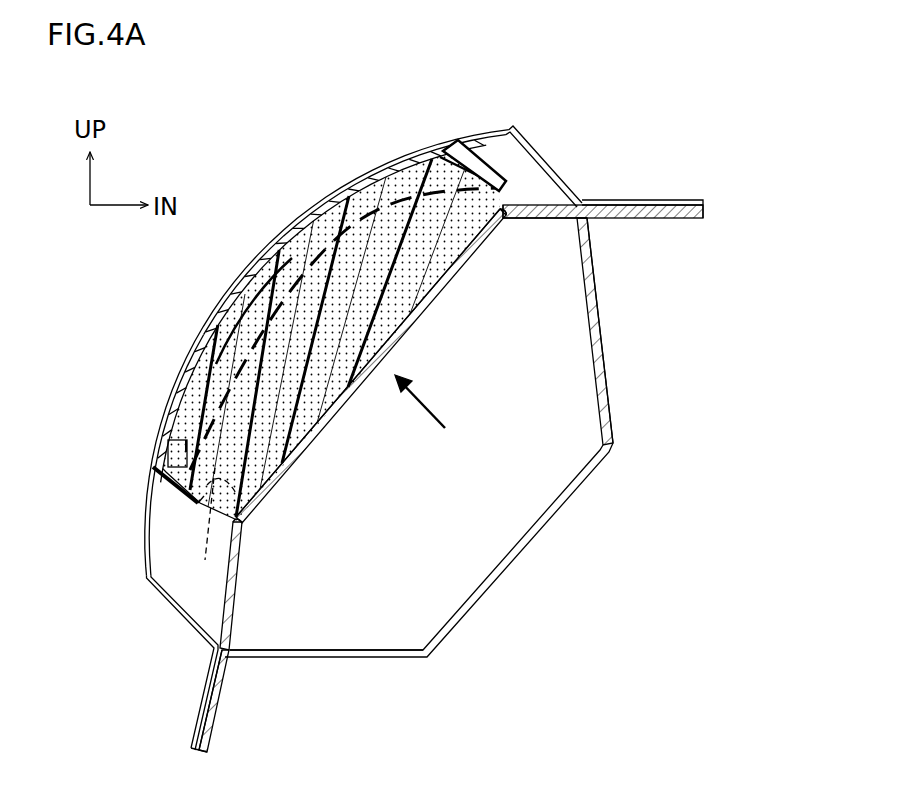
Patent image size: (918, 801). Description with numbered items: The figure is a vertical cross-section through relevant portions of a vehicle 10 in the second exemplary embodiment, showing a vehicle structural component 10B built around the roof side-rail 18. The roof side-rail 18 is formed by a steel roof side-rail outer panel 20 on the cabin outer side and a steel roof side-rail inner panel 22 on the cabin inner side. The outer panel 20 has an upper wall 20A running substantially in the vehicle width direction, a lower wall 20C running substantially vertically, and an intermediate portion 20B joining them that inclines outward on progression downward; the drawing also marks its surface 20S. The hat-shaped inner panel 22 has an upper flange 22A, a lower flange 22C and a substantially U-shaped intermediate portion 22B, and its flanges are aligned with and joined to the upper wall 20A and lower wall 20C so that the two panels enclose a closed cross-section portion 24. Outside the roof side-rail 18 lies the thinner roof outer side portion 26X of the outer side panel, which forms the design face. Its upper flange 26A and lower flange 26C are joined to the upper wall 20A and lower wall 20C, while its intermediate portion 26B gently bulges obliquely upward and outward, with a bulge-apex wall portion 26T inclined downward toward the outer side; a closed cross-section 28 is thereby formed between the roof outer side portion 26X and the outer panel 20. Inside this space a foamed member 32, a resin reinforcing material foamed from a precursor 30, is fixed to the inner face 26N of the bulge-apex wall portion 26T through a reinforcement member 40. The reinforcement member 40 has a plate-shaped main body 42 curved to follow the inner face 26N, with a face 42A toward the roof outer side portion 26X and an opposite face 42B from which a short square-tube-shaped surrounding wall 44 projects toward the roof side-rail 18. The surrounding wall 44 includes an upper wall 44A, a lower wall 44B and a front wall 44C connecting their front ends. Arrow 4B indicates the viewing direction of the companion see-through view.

The vehicle 10 is at (93, 633).
The vehicle structural component 10B is at (112, 558).
The roof side-rail 18 is at (638, 355).
The roof side-rail outer panel 20 is at (296, 486).
The upper wall 20A is at (668, 205).
The intermediate portion 20B is at (352, 412).
The lower wall 20C is at (208, 712).
The case wall surface 20S is at (320, 432).
The roof side-rail inner panel 22 is at (470, 630).
The upper flange 22A is at (665, 220).
The intermediate portion 22B is at (505, 567).
The lower flange 22C is at (225, 712).
The closed cross-section portion 24 is at (416, 563).
The upper flange 26A is at (625, 200).
The intermediate portion 26B is at (262, 247).
The lower flange 26C is at (212, 690).
The inner face 26N is at (198, 325).
The bulge-apex wall portion 26T is at (229, 284).
The roof outer side portion 26X is at (472, 128).
The closed cross-section 28 is at (542, 183).
The precursor 30 is at (190, 447).
The foamed member 32 is at (506, 210).
The reinforcement member 40 is at (423, 140).
The main body 42 is at (322, 190).
The face 42A is at (270, 224).
The face 42B is at (363, 196).
The surrounding wall 44 is at (513, 126).
The upper wall 44A is at (478, 162).
The lower wall 44B is at (172, 498).
The front wall 44C is at (208, 514).
The arrow 4B is at (432, 410).